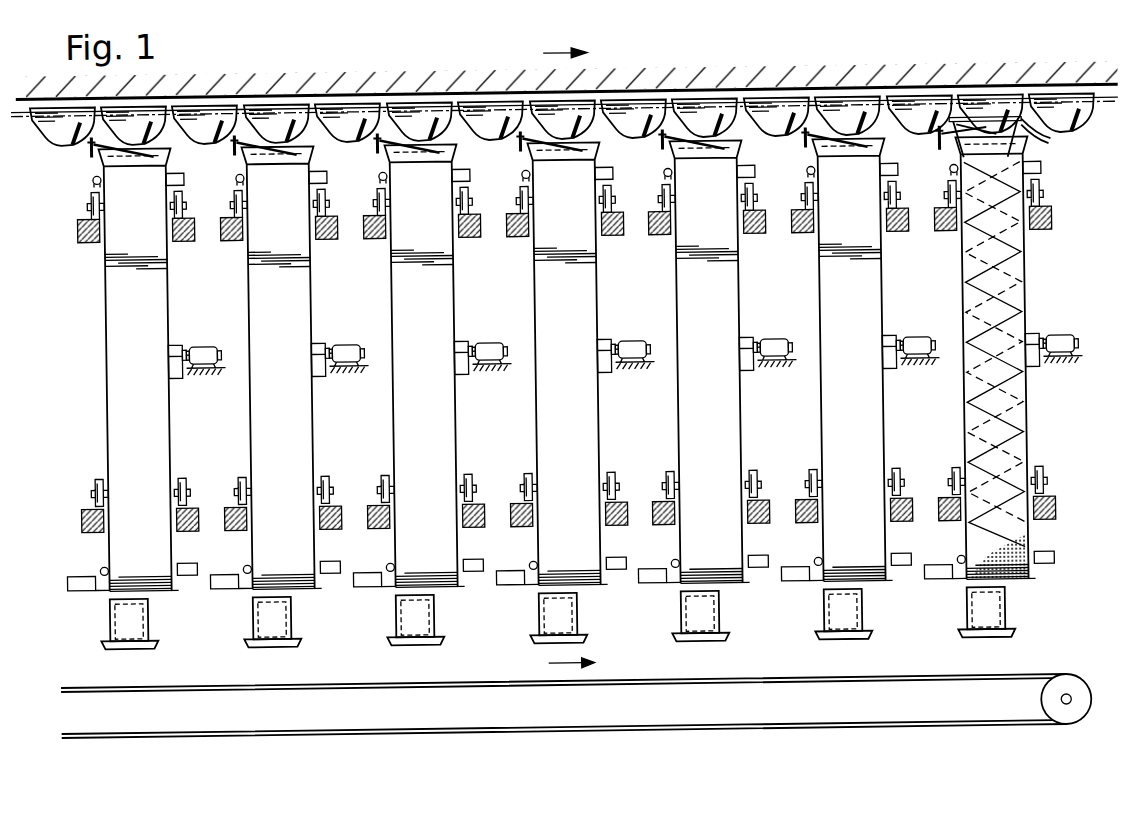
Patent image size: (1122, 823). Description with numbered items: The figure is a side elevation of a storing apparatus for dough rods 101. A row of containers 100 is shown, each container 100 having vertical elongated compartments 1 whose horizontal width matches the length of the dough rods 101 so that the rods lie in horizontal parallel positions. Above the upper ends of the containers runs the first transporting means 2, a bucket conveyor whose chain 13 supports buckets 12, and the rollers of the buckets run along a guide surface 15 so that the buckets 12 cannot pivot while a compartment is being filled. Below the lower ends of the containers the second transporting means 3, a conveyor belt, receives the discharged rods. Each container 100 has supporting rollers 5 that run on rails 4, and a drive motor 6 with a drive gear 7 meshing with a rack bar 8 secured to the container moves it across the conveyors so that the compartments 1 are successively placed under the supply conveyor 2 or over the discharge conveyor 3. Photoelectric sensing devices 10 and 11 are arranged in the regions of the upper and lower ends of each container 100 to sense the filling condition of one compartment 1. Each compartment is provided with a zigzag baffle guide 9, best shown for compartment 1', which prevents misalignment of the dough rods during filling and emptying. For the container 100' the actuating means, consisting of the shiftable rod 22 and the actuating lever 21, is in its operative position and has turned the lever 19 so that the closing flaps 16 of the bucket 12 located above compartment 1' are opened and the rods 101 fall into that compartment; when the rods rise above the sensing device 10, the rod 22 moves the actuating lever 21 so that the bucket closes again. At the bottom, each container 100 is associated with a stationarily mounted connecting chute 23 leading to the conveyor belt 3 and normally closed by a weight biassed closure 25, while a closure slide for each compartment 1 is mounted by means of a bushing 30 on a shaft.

The compartment 1 is at (586, 363).
The compartment being filled 1' is at (956, 358).
The first transporting means 2 is at (601, 107).
The second transporting means 3 is at (511, 706).
The rails 4 is at (522, 249).
The supporting rollers 5 is at (383, 219).
The drive motor 6 is at (206, 352).
The drive gear 7 is at (184, 349).
The rack bar 8 is at (177, 381).
The zigzag baffle guide 9 is at (1025, 424).
The photoelectric sensing device 10 is at (529, 176).
The photoelectric sensing device 11 is at (181, 574).
The bucket 12 is at (52, 128).
The chain 13 is at (356, 109).
The guide surface 15 is at (737, 89).
The closing flap 16 is at (1026, 140).
The lever 19 is at (997, 132).
The actuating lever 21 is at (954, 145).
The shiftable rod 22 is at (943, 152).
The connecting chute 23 is at (672, 614).
The weight biassed closure 25 is at (289, 644).
The bushing 30 is at (363, 577).
The container 100 is at (494, 353).
The container with actuating means in operative position 100' is at (1041, 341).
The dough rods 101 is at (1028, 560).